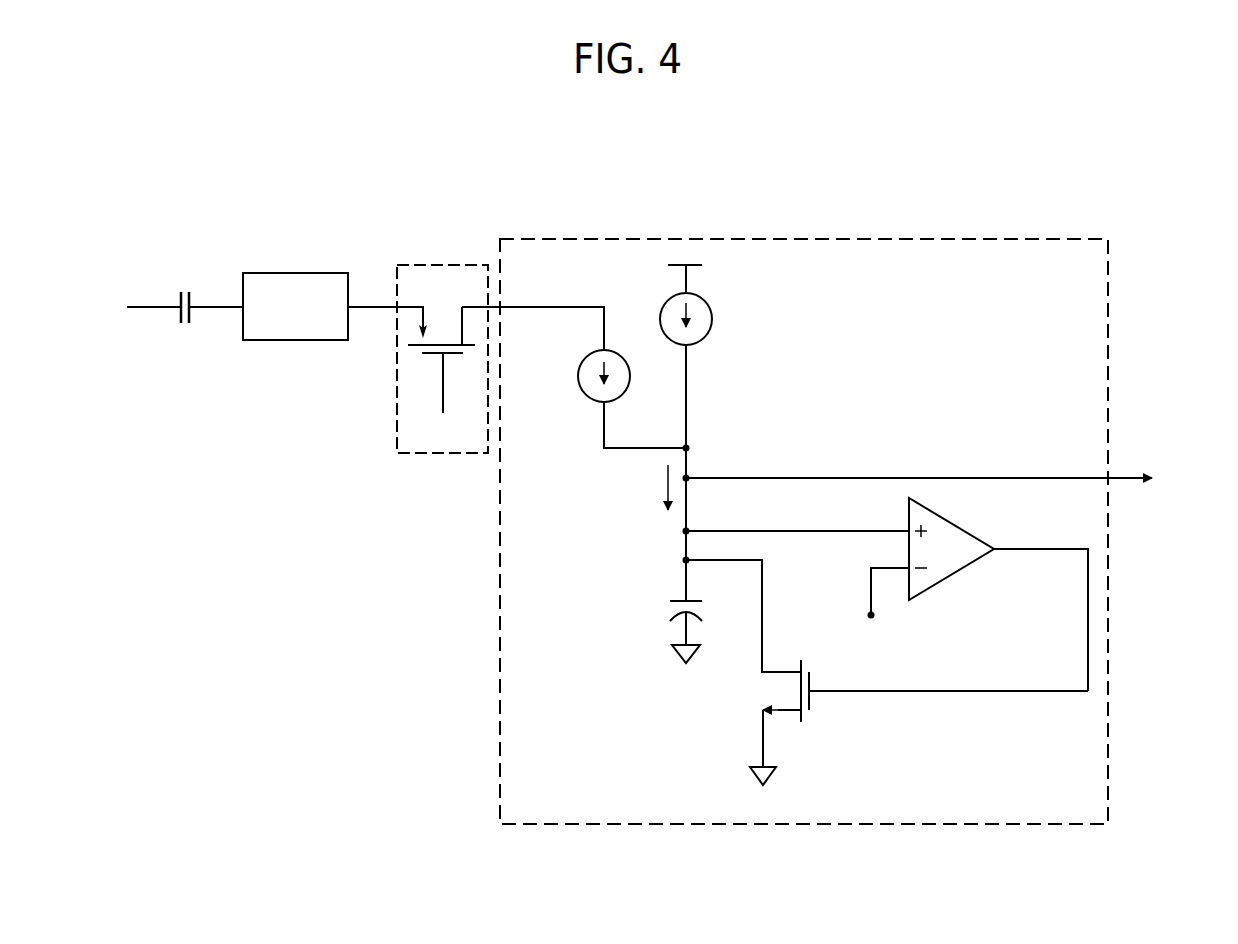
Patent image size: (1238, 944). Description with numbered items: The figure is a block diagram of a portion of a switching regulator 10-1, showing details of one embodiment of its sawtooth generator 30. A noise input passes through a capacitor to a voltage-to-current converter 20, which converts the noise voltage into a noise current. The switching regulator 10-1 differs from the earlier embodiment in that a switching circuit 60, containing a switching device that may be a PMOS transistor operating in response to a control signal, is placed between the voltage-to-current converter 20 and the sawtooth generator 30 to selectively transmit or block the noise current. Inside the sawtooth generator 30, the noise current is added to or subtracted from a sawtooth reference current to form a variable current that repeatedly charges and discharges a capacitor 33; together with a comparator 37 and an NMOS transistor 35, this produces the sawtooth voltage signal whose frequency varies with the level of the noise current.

The switching regulator 10-1 is at (1142, 157).
The voltage-to-current converter 20 is at (297, 273).
The switching circuit 60 is at (442, 265).
The sawtooth generator 30 is at (817, 238).
The capacitor 33 is at (668, 603).
The NMOS transistor 35 is at (770, 690).
The comparator 37 is at (955, 520).